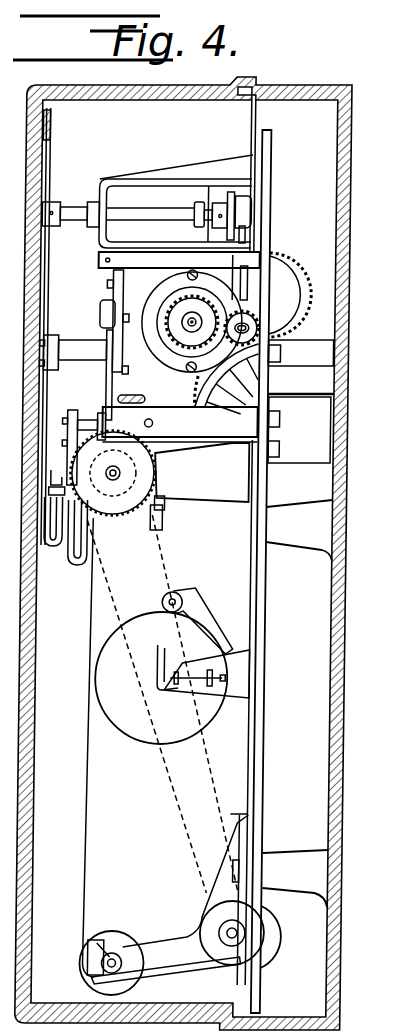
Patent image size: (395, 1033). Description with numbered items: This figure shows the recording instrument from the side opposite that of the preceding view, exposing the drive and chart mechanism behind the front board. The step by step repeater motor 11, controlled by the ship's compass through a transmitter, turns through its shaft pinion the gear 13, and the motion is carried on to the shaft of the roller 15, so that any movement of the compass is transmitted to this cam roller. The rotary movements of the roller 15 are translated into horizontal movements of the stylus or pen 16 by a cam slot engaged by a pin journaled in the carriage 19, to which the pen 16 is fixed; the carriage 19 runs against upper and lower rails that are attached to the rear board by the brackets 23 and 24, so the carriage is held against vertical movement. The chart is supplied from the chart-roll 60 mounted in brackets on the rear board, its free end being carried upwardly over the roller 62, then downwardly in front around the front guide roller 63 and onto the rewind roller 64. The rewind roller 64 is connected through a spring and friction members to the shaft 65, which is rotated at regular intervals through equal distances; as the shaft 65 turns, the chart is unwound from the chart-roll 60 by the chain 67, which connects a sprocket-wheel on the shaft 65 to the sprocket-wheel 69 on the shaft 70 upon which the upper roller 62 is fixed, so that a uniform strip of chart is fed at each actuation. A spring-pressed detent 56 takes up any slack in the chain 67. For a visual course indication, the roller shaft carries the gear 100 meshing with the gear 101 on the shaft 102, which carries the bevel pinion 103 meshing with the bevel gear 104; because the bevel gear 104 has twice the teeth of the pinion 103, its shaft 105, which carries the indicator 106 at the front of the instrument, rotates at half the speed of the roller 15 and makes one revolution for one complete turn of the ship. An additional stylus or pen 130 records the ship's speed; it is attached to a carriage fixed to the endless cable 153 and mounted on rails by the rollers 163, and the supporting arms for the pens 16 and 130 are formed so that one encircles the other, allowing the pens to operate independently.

The step by step repeater motor 11 is at (226, 397).
The gear 13 is at (290, 295).
The roller 15 is at (94, 375).
The stylus or pen 16 is at (77, 452).
The carriage 19 is at (123, 322).
The bracket 23 is at (179, 261).
The bracket 24 is at (179, 424).
The spring-pressed detent 56 is at (184, 597).
The chart-roll 60 is at (146, 741).
The roller 62 is at (113, 473).
The front guide roller 63 is at (127, 934).
The rewind roller 64 is at (280, 950).
The shaft 65 is at (242, 928).
The chain 67 is at (183, 801).
The sprocket-wheel 69 is at (152, 483).
The shaft 70 is at (113, 471).
The gear 100 is at (191, 321).
The gear 101 is at (260, 321).
The shaft 102 is at (246, 279).
The bevel pinion 103 is at (246, 200).
The bevel gear 104 is at (231, 192).
The shaft 105 is at (142, 213).
The indicator 106 is at (48, 164).
The stylus or pen 130 is at (81, 546).
The endless cable 153 is at (132, 413).
The rollers 163 is at (166, 533).